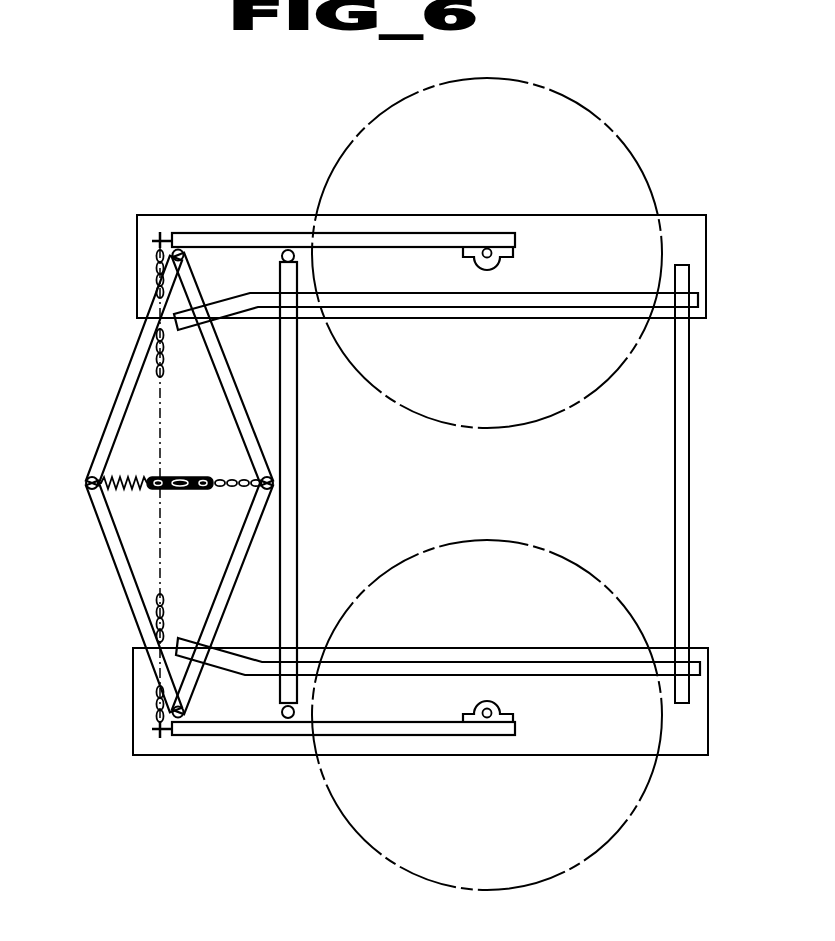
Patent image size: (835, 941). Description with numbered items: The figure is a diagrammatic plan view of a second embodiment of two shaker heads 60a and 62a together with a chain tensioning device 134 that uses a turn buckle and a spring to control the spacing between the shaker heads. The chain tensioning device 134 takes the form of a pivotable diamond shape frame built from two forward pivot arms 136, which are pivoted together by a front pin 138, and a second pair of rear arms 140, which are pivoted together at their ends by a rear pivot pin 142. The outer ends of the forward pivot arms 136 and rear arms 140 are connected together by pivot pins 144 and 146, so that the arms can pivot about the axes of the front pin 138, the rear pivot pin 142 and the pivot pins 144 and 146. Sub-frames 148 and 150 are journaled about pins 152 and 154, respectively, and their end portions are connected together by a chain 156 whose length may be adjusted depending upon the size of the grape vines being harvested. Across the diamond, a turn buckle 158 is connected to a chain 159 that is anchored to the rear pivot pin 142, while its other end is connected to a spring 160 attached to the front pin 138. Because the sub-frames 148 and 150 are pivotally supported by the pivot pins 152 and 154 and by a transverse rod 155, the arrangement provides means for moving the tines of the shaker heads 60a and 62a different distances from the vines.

The shaker head 60a is at (598, 103).
The shaker head 62a is at (605, 852).
The chain tensioning device 134 is at (190, 484).
The forward pivot arms 136 is at (135, 340).
The front pin 138 is at (88, 484).
The rear arms 140 is at (250, 404).
The rear pivot pin 142 is at (275, 484).
The pivot pin 144 is at (178, 247).
The pivot pin 146 is at (178, 735).
The sub-frame 148 is at (413, 243).
The sub-frame 150 is at (403, 730).
The pin 152 is at (288, 248).
The pin 154 is at (288, 732).
The transverse rod 155 is at (298, 576).
The chain 156 is at (155, 603).
The turn buckle 158 is at (178, 490).
The chain 159 is at (240, 478).
The spring 160 is at (113, 478).